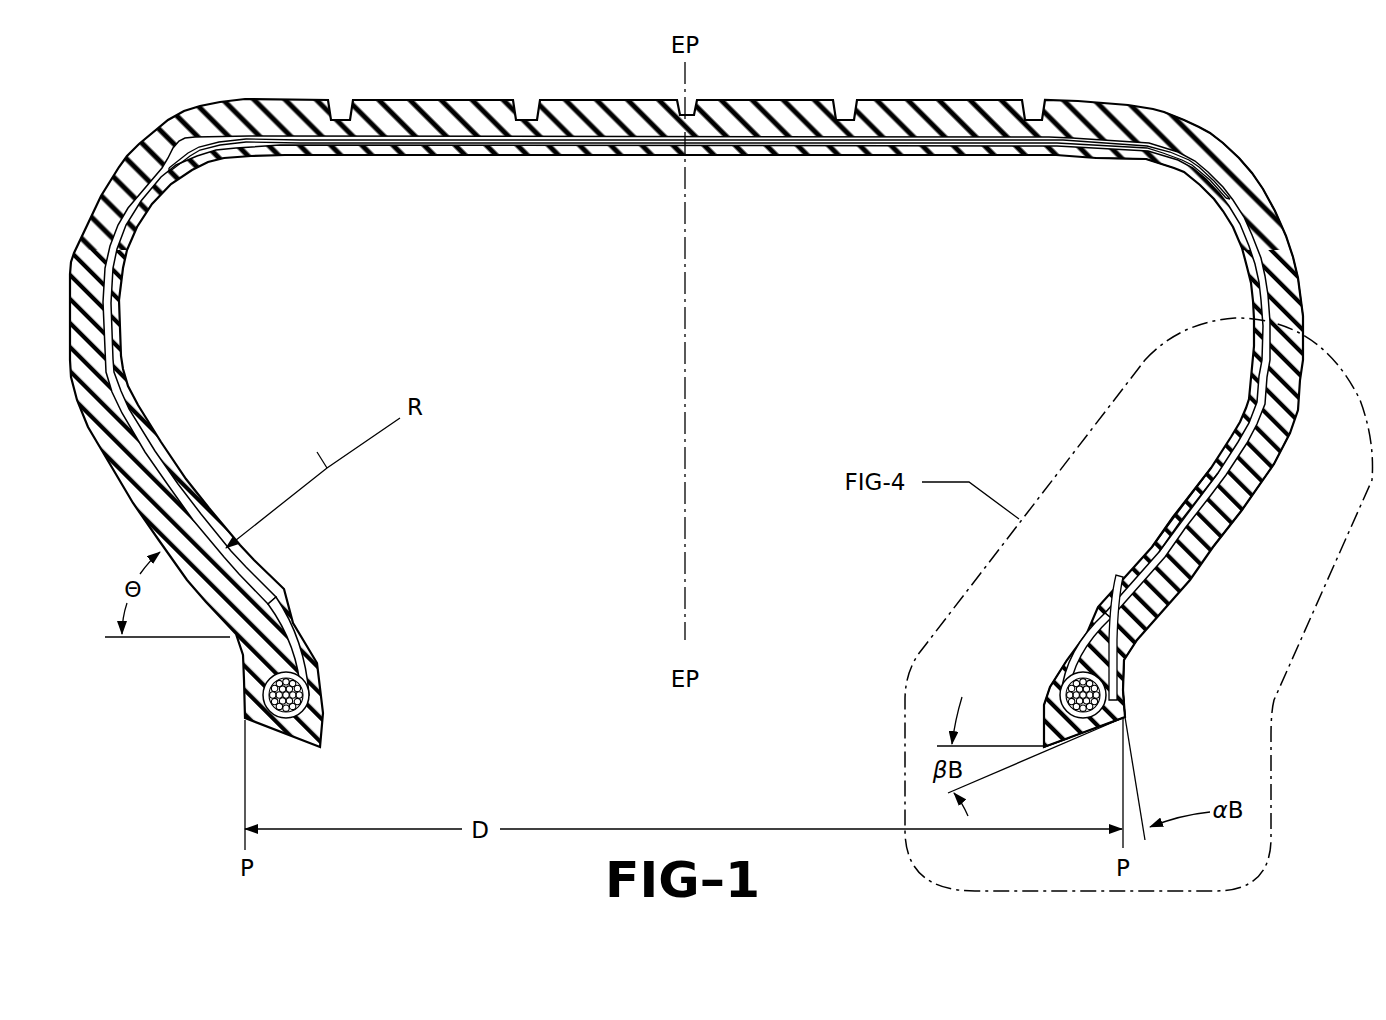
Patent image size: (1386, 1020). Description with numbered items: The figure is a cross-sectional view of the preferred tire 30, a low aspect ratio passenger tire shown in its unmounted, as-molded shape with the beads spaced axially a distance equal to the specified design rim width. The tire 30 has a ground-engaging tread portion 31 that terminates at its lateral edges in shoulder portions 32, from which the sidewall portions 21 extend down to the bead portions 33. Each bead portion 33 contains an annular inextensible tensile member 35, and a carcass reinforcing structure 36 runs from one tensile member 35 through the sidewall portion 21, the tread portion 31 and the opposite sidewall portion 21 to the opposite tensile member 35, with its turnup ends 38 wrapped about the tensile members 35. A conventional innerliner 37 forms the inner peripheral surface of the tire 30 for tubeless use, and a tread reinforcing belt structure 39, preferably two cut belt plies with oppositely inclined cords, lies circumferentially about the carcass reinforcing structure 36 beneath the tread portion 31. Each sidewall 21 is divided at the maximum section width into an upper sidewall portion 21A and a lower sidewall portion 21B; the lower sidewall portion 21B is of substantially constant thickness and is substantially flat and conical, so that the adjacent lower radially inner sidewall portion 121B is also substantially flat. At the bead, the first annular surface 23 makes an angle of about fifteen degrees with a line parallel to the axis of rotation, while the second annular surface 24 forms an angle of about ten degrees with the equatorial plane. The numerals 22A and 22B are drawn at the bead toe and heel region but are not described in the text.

The sidewall portion 21 is at (1299, 291).
The upper sidewall portion 21A is at (1251, 178).
The lower sidewall portion 21B is at (1245, 500).
The bead toe 22A is at (1046, 749).
The bead heel 22B is at (1118, 713).
The first annular surface 23 is at (1090, 727).
The second annular surface 24 is at (1123, 690).
The tire 30 is at (516, 171).
The tread portion 31 is at (418, 96).
The shoulder portion 32 is at (1217, 116).
The bead portion 33 is at (1133, 653).
The annular inextensible tensile member 35 is at (1058, 680).
The carcass reinforcing structure 36 is at (934, 148).
The innerliner 37 is at (799, 155).
The turnup end 38 is at (1182, 572).
The tread reinforcing belt structure 39 is at (913, 140).
The lower radially inner sidewall portion 121B is at (1172, 517).